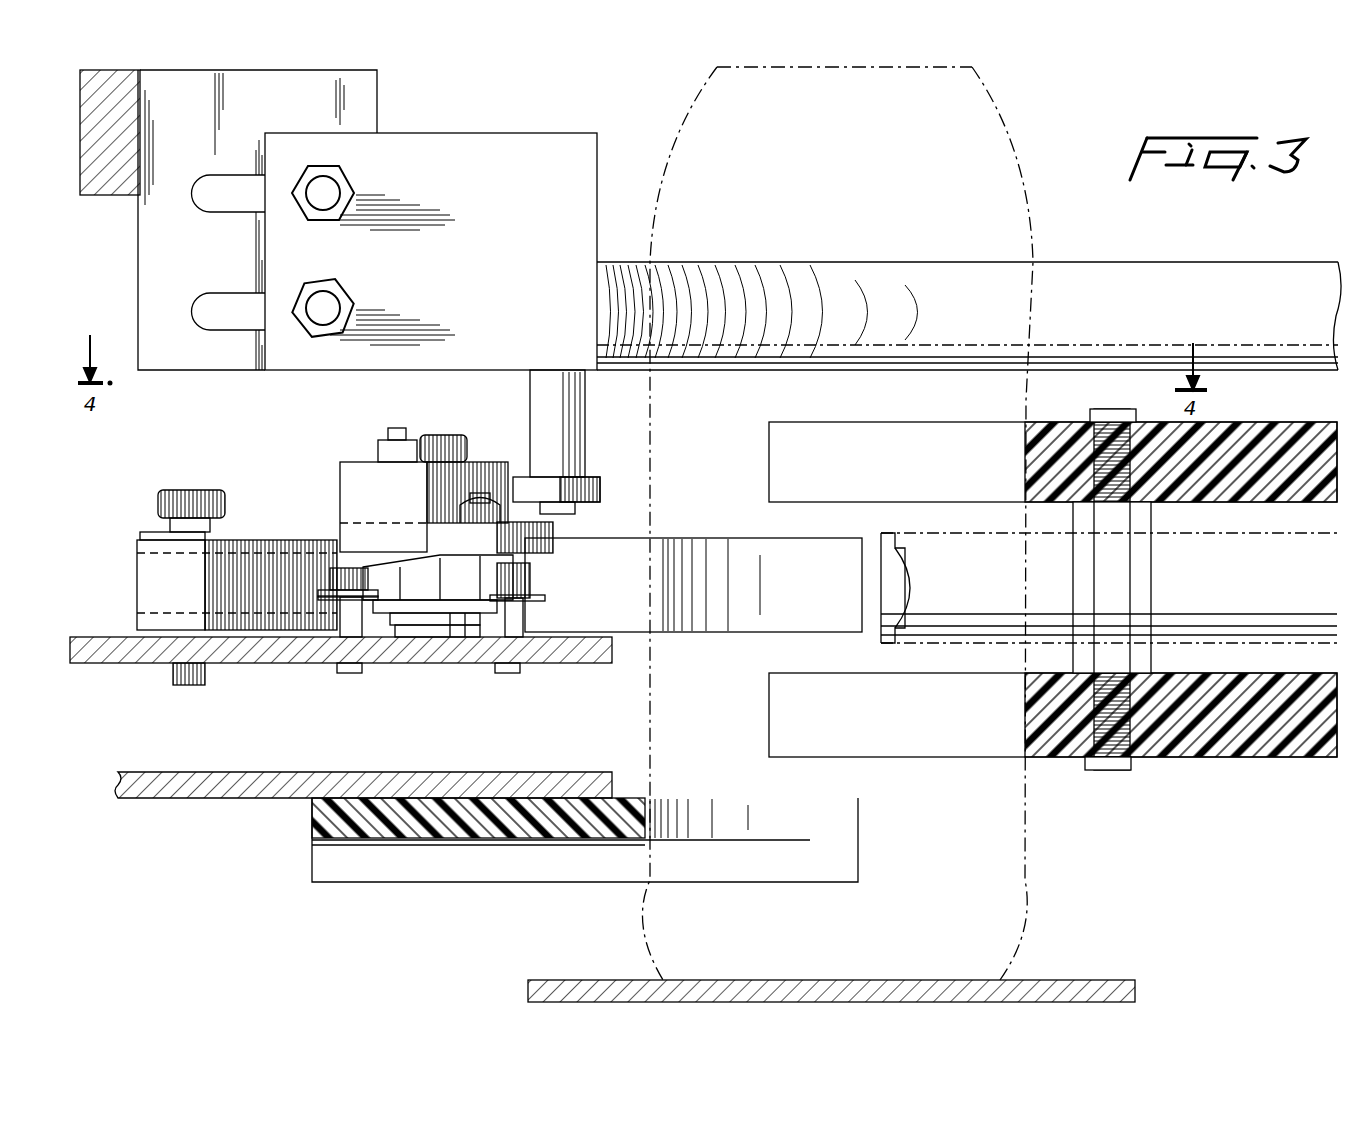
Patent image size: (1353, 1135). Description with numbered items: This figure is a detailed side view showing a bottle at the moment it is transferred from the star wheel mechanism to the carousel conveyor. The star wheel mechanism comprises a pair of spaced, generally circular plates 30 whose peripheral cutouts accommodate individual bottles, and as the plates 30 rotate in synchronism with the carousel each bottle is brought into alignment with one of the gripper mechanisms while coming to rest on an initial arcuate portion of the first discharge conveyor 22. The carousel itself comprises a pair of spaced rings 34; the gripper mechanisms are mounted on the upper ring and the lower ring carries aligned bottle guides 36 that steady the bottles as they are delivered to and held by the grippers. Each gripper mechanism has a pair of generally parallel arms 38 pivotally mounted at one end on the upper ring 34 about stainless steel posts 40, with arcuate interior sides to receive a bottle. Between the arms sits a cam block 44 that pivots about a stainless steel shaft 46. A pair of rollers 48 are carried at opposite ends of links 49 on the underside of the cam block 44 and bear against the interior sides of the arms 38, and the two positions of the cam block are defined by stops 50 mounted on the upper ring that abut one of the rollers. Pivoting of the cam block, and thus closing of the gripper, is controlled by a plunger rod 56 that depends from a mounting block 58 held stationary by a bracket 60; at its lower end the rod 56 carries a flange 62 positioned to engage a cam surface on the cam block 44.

The first discharge conveyor 22 is at (1040, 978).
The circular plates 30 is at (1253, 423).
The rings 34 is at (245, 658).
The bottle guides 36 is at (476, 870).
The arms 38 is at (637, 543).
The stainless steel posts 40 is at (205, 490).
The cam block 44 is at (350, 475).
The stainless steel shaft 46 is at (437, 436).
The rollers 48 is at (380, 568).
The links 49 is at (468, 630).
The stops 50 is at (535, 598).
The plunger rod 56 is at (575, 427).
The mounting block 58 is at (587, 175).
The bracket 60 is at (368, 112).
The flange 62 is at (600, 490).